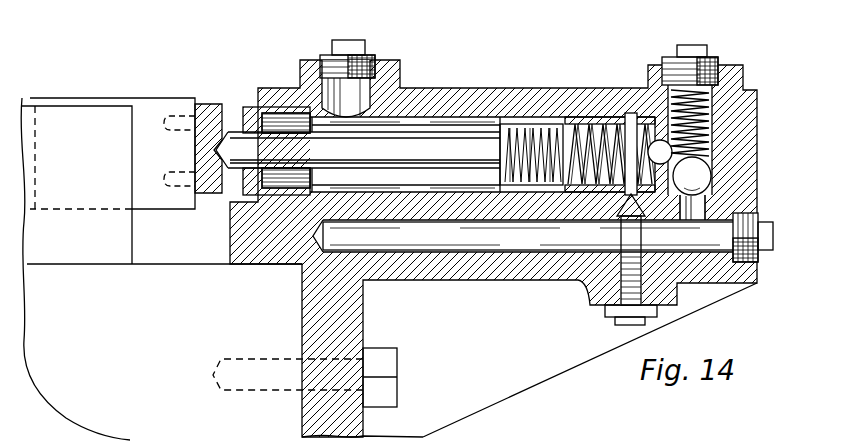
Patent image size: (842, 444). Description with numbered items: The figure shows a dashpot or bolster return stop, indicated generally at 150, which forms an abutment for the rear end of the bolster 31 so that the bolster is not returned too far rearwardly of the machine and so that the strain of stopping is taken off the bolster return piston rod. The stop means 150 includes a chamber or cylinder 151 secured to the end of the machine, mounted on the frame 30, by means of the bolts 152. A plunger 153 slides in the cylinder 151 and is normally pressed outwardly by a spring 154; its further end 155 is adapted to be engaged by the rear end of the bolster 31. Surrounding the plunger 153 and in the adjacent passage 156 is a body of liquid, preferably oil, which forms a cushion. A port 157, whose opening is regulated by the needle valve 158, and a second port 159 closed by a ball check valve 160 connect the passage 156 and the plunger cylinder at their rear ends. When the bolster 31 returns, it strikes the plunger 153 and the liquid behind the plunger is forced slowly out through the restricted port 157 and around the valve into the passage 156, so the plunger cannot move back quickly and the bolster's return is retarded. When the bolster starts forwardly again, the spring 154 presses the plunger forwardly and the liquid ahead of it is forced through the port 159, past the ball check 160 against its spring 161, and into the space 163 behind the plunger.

The machine frame 30 is at (222, 269).
The bolster 31 is at (142, 106).
The bolster return stop means 150 is at (454, 88).
The chamber 151 is at (483, 110).
The bolts 152 is at (385, 368).
The plunger 153 is at (358, 154).
The spring 154 is at (590, 120).
The further end of plunger 155 is at (232, 140).
The passage 156 is at (531, 237).
The port 157 is at (655, 230).
The needle valve 158 is at (640, 244).
The second port 159 is at (700, 205).
The ball check valve 160 is at (696, 176).
The spring 161 is at (708, 118).
The space 163 is at (645, 105).